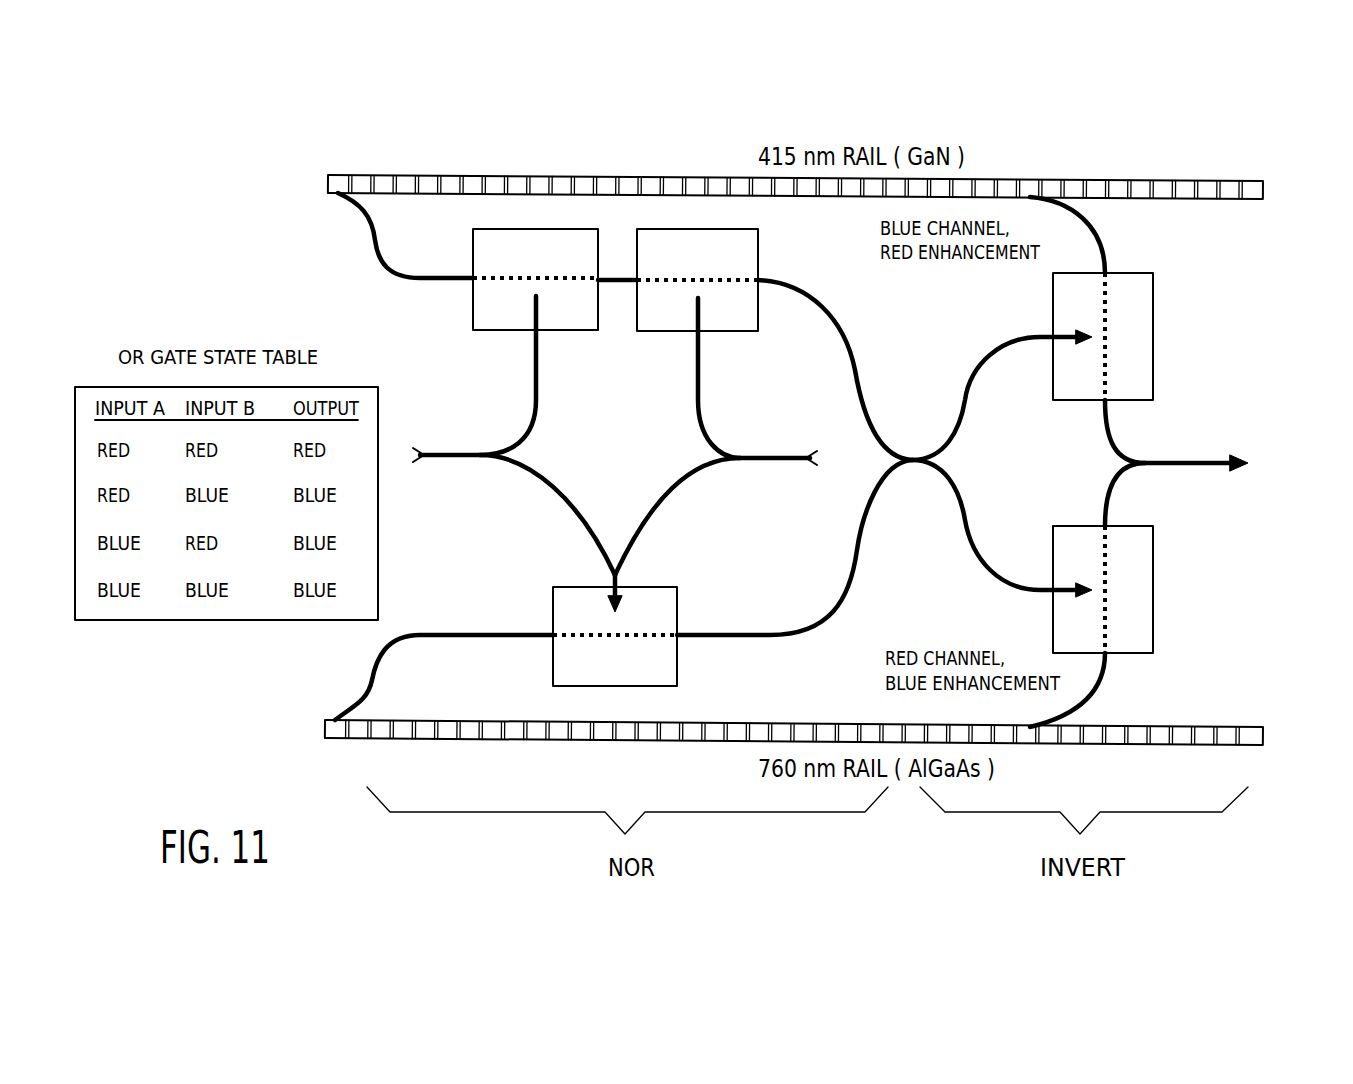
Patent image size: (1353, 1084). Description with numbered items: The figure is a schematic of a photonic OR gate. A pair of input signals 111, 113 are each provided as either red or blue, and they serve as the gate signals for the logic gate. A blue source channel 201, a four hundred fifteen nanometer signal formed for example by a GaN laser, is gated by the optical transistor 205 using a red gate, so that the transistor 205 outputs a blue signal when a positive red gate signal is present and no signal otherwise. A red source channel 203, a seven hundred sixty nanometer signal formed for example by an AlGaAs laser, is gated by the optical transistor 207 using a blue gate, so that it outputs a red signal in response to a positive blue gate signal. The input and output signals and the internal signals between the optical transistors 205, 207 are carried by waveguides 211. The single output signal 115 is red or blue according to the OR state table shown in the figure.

The input signal 111 is at (420, 452).
The input signal 113 is at (815, 455).
The output signal 115 is at (1223, 458).
The blue source channel 201 is at (863, 195).
The red source channel 203 is at (795, 722).
The optical transistor 205 is at (473, 299).
The optical transistor 207 is at (677, 605).
The waveguides 211 is at (774, 460).